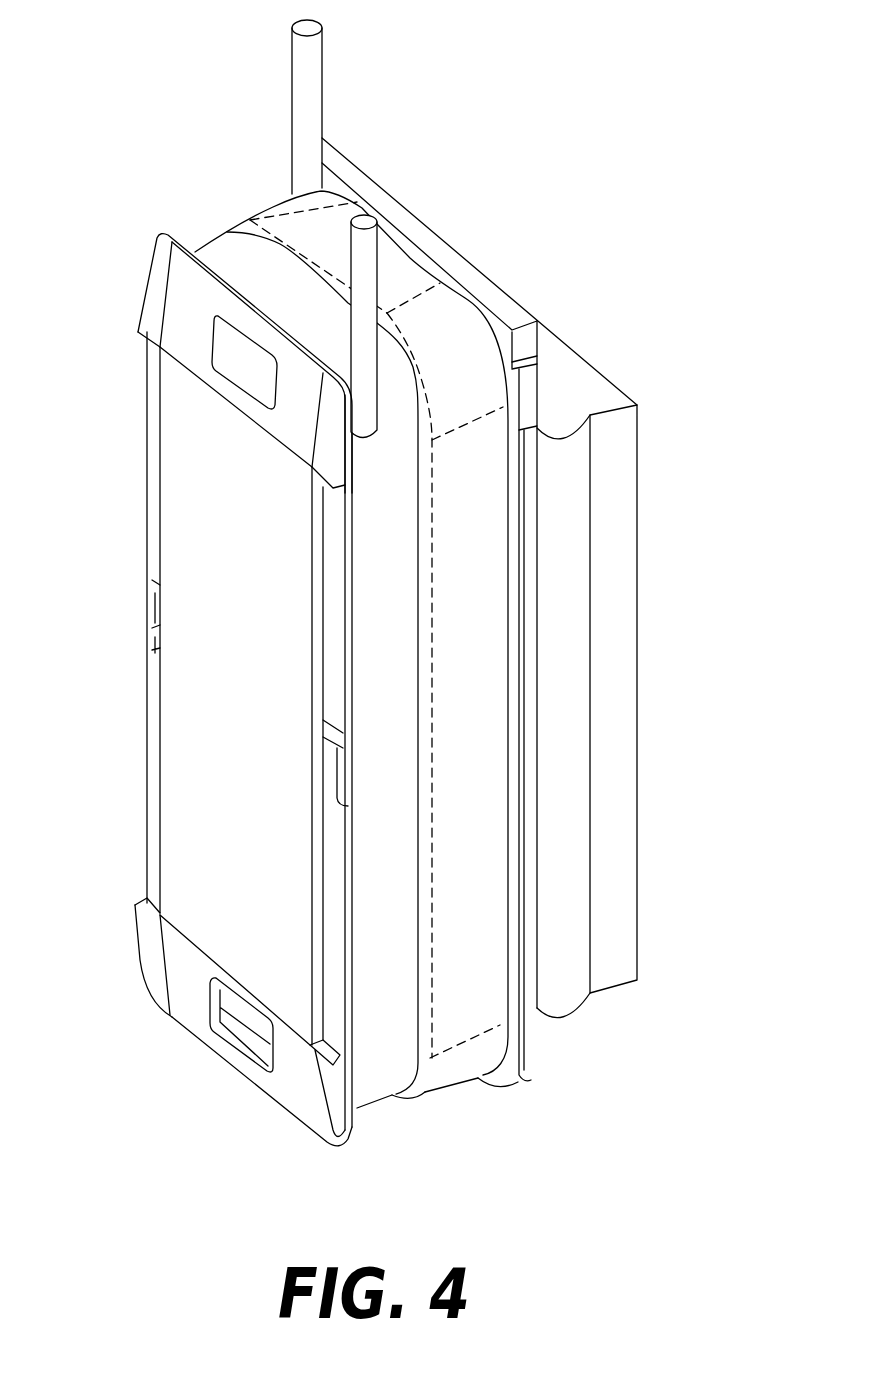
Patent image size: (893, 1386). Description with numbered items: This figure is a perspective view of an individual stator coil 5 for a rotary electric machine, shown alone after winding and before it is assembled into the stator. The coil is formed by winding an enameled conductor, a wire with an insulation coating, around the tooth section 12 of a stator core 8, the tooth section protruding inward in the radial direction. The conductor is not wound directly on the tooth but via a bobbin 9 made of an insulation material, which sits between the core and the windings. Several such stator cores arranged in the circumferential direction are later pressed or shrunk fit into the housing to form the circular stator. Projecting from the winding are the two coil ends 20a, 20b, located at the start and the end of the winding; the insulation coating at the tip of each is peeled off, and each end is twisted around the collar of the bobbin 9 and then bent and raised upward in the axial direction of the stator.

The stator coil 5 is at (441, 282).
The stator core 8 is at (610, 650).
The bobbin 9 is at (333, 1130).
The tooth section 12 is at (210, 708).
The coil end 20a is at (308, 70).
The coil end 20b is at (365, 255).